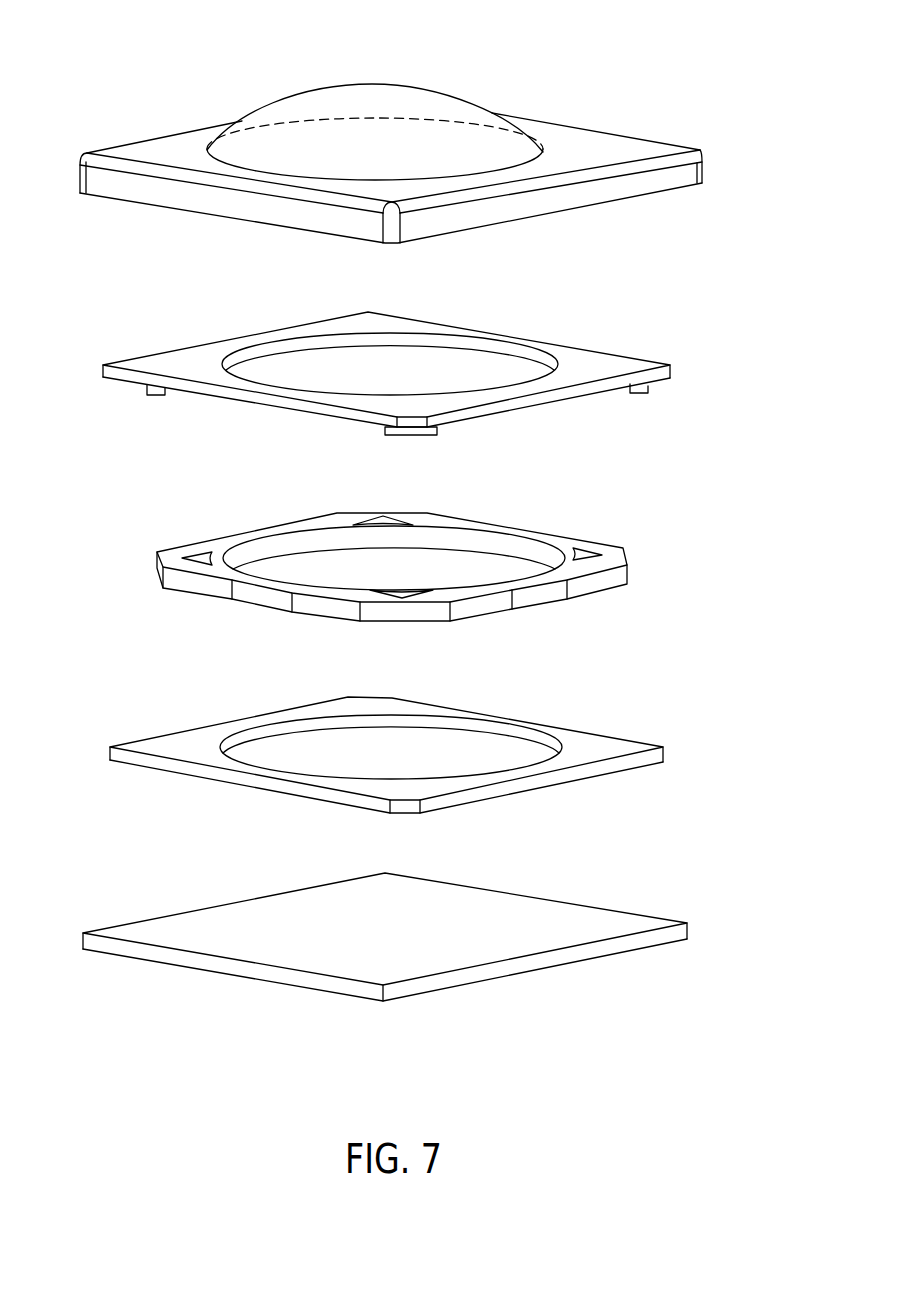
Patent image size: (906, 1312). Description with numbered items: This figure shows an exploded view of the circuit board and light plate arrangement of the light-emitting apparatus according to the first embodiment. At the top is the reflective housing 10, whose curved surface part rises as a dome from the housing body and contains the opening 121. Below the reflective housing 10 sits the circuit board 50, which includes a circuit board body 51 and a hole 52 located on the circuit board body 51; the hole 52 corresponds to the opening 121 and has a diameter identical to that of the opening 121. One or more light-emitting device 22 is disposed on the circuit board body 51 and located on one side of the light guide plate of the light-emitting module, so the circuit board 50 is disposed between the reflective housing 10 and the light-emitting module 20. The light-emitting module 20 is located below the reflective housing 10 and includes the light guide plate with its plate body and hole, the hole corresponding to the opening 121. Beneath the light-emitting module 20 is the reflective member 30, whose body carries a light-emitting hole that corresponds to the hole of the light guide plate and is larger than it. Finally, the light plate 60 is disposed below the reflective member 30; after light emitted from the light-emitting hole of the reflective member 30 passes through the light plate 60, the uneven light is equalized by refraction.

The reflective housing 10 is at (407, 125).
The opening 121 is at (433, 118).
The circuit board 50 is at (406, 358).
The circuit board body 51 is at (180, 365).
The hole 52 is at (310, 343).
The light-emitting device 22 is at (153, 397).
The light-emitting module 20 is at (617, 520).
The reflective member 30 is at (638, 710).
The light plate 60 is at (642, 888).